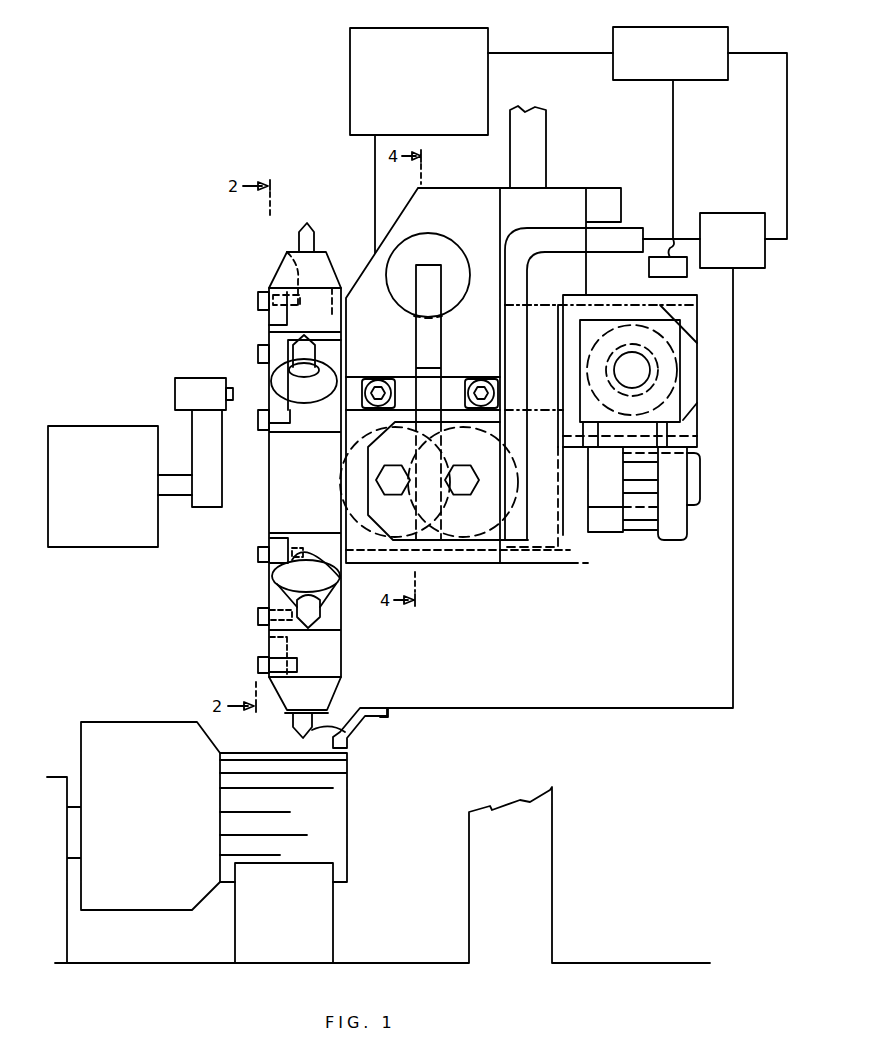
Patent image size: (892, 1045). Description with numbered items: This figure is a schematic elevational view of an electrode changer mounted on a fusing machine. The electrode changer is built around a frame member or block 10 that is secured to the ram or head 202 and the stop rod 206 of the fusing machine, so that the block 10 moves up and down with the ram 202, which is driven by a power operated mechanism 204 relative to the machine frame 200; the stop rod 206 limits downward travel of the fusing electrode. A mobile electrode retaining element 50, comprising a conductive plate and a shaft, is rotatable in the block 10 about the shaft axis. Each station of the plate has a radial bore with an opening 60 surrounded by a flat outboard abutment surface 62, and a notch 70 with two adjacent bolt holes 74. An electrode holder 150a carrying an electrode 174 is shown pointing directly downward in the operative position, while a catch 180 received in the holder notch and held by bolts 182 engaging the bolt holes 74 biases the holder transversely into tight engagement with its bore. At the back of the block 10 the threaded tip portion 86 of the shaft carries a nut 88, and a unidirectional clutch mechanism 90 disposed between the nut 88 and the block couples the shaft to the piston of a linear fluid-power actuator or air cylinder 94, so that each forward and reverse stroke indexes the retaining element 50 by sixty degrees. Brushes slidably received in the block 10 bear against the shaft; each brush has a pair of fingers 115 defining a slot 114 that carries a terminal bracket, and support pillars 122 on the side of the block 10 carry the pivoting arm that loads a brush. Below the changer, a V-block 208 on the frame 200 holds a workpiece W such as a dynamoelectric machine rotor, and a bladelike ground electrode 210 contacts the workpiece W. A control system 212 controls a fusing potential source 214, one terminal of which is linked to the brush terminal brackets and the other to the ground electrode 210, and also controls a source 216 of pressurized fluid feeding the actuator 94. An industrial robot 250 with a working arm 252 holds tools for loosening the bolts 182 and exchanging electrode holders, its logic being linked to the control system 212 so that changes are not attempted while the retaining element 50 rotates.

The frame member or block 10 is at (366, 238).
The mobile electrode retaining element 50 is at (252, 319).
The opening 60 is at (288, 252).
The outboard abutment surface 62 is at (341, 287).
The notch 70 is at (340, 575).
The bolt holes 74 is at (278, 573).
The tip portion 86 is at (700, 470).
The nut 88 is at (672, 541).
The unidirectional clutch mechanism 90 is at (627, 540).
The linear fluid-power actuator or air cylinder 94 is at (680, 358).
The slot 114 is at (432, 540).
The fingers 115 is at (393, 515).
The support pillars 122 is at (378, 378).
The electrode holder 150a is at (343, 690).
The electrode 174 is at (314, 246).
The catch 180 is at (262, 560).
The bolts 182 is at (258, 552).
The frame 200 is at (545, 823).
The ram or head 202 is at (374, 150).
The power operated mechanism 204 is at (489, 53).
The stop rod 206 is at (540, 134).
The V-block 208 is at (335, 920).
The ground electrode 210 is at (370, 728).
The control system 212 is at (615, 47).
The fusing potential source 214 is at (736, 213).
The source of fluid under pressure 216 is at (688, 278).
The industrial robot 250 is at (157, 416).
The arm or working component 252 is at (224, 378).
The workpiece W is at (344, 815).